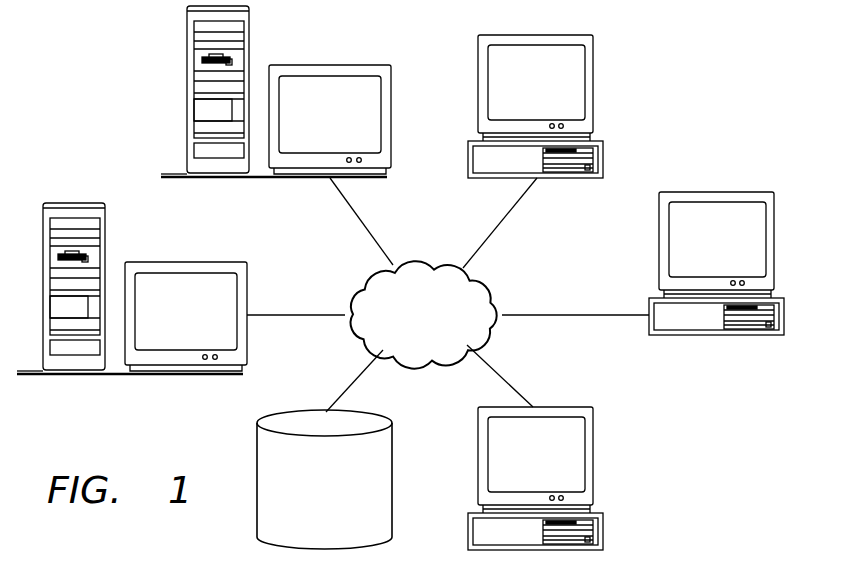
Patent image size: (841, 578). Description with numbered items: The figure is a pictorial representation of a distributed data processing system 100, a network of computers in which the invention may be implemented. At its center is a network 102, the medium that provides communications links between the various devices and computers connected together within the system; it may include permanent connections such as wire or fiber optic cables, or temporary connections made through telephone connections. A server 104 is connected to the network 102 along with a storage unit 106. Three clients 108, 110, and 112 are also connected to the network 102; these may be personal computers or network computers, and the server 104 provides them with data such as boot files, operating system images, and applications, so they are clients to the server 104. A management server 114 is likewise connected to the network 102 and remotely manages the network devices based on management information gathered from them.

The distributed data processing system 100 is at (703, 109).
The network 102 is at (407, 344).
The server 104 is at (206, 319).
The storage unit 106 is at (309, 522).
The client 108 is at (557, 96).
The client 110 is at (738, 251).
The client 112 is at (556, 466).
The management server 114 is at (351, 122).